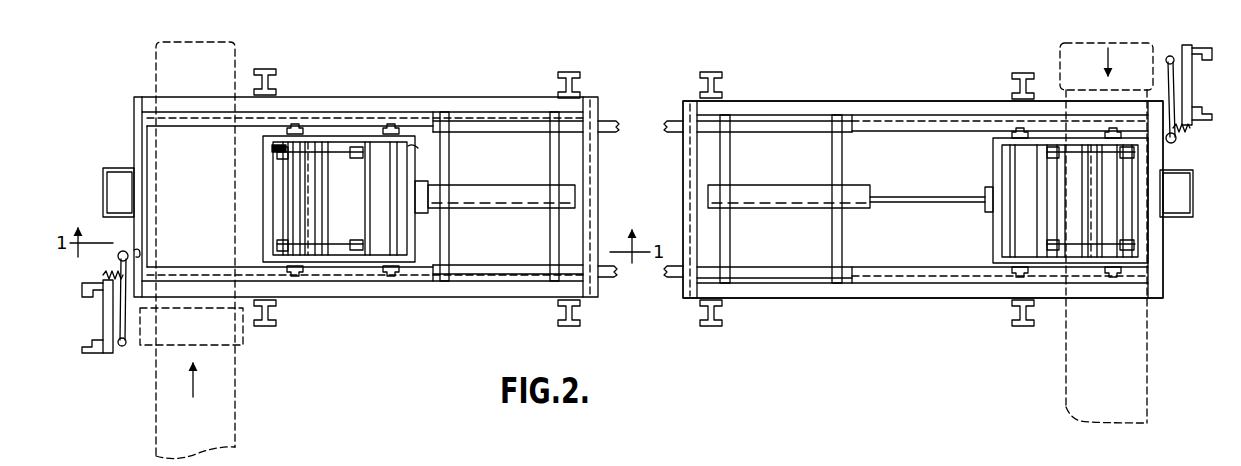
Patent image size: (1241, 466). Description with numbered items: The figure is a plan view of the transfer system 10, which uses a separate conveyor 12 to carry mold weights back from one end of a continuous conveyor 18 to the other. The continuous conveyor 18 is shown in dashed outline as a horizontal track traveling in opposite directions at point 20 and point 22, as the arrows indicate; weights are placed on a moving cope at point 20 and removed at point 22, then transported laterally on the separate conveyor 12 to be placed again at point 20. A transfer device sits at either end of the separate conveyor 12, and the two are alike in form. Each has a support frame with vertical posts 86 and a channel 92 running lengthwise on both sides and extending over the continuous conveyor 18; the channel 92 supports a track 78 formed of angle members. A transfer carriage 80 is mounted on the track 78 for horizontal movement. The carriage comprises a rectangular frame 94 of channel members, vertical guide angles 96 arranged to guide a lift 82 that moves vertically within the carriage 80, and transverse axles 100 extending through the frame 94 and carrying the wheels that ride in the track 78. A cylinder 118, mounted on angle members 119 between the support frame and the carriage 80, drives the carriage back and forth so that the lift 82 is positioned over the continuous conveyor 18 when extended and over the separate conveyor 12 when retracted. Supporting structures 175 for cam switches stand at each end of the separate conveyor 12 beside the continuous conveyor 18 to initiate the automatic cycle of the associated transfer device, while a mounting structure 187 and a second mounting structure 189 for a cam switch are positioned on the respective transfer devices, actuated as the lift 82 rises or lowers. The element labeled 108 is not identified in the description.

The transfer system 10 is at (798, 328).
The separate conveyor 12 is at (609, 120).
The continuous conveyor 18 is at (238, 61).
The point 20 is at (196, 191).
The point 22 is at (1112, 197).
The track 78 is at (937, 133).
The transfer carriage 80 is at (259, 228).
The lift 82 is at (283, 187).
The vertical posts 86 is at (722, 91).
The channel 92 is at (358, 97).
The frame 94 is at (416, 148).
The vertical guide angles 96 is at (273, 148).
The transverse axles 100 is at (390, 228).
The plate 108 is at (328, 228).
The cylinder 118 is at (503, 207).
The angle members 119 is at (549, 255).
The supporting structure 175 is at (109, 363).
The mounting structure 187 is at (110, 164).
The second mounting structure 189 is at (1198, 199).